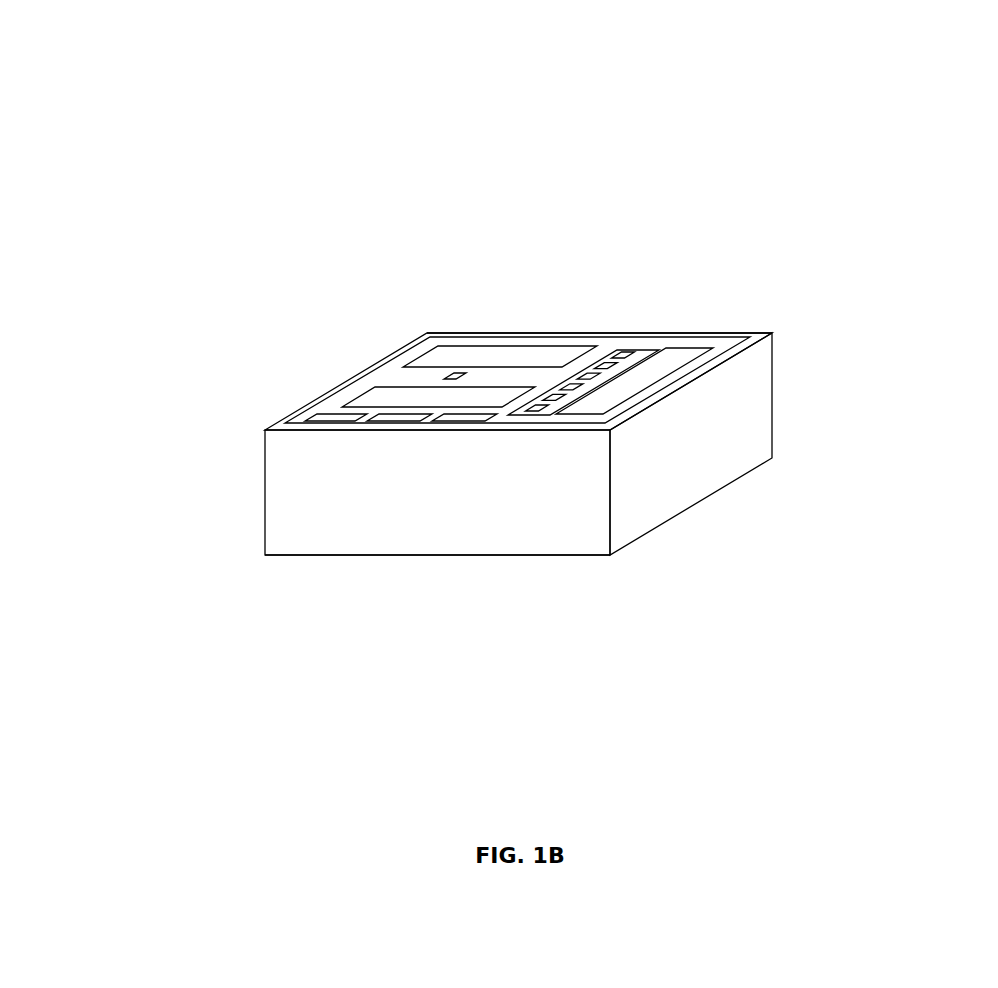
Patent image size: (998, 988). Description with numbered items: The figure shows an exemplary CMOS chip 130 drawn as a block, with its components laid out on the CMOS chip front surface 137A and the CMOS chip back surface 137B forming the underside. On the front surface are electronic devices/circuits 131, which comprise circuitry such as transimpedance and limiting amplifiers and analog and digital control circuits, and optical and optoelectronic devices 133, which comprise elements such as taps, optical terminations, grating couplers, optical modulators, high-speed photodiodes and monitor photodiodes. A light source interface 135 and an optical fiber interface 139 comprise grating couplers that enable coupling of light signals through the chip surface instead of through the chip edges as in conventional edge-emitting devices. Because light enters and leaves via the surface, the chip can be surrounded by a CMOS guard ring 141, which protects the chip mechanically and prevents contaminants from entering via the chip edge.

The CMOS chip 130 is at (128, 94).
The electronic devices/circuits 131 is at (356, 613).
The optical and optoelectronic devices 133 is at (427, 353).
The light source interface 135 is at (453, 372).
The CMOS chip front surface 137A is at (601, 344).
The CMOS chip back surface 137B is at (570, 562).
The optical fiber interface 139 is at (628, 344).
The CMOS guard ring 141 is at (760, 356).